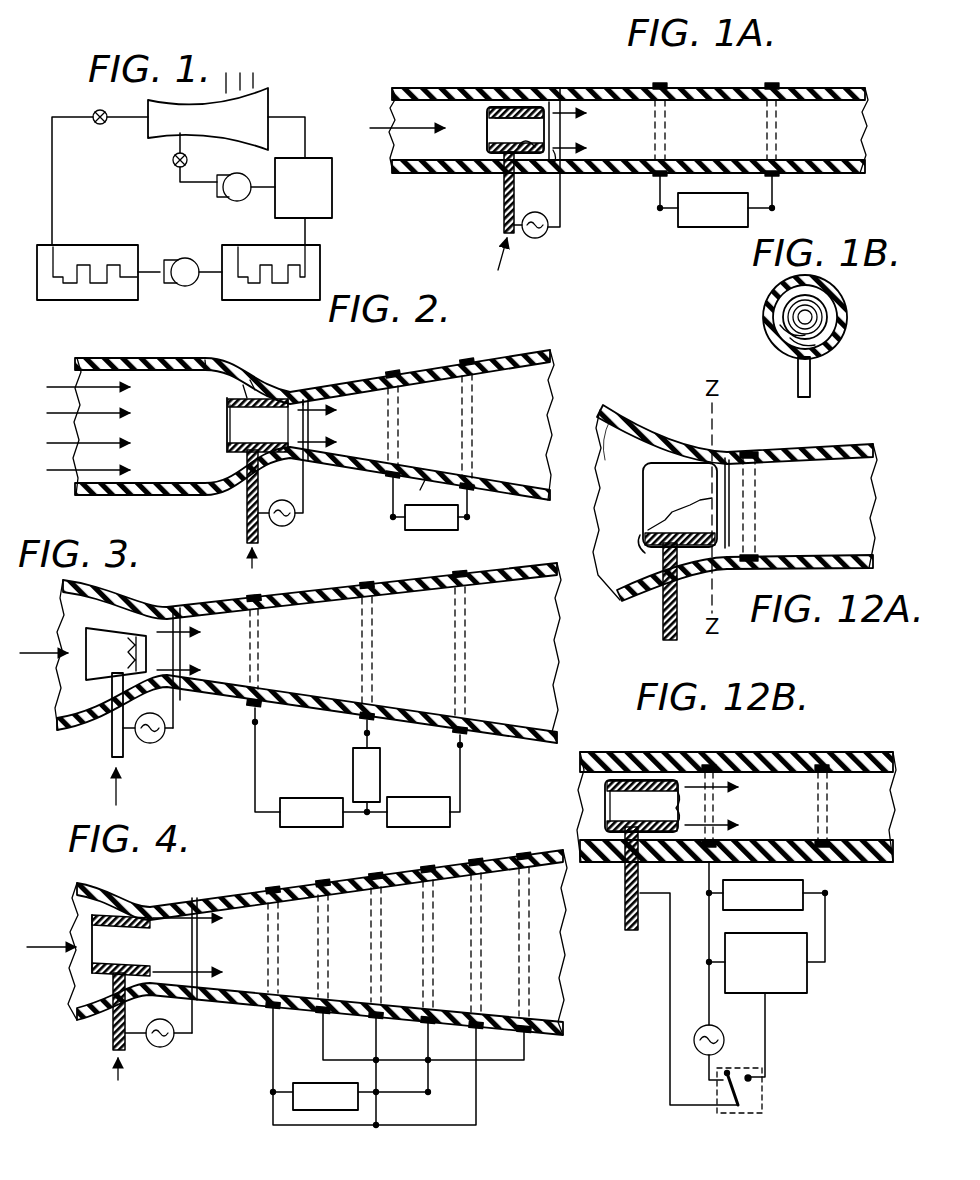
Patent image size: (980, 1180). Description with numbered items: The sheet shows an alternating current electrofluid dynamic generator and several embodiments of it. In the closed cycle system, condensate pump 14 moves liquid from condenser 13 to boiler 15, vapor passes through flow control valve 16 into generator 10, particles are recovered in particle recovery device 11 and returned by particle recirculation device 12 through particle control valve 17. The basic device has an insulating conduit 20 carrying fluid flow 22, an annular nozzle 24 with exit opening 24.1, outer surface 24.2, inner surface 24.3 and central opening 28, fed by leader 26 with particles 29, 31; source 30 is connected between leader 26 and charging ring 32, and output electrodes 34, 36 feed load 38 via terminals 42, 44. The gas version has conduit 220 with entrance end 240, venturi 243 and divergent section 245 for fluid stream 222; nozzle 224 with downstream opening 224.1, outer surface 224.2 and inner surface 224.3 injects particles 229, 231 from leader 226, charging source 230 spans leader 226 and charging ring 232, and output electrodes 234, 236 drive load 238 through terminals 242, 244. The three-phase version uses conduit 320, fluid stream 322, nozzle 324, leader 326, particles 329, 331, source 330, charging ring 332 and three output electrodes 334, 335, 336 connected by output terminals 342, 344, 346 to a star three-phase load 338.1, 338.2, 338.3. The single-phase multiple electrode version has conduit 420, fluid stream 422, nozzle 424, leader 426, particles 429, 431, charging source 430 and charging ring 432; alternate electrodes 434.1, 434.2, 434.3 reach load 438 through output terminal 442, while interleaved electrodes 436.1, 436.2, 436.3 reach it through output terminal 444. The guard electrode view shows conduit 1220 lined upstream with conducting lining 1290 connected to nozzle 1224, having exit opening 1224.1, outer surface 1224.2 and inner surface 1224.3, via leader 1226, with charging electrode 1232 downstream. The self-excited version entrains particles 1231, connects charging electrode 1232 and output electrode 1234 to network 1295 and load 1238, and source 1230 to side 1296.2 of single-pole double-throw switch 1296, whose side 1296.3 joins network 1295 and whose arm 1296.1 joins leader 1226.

In FIG. 1, the alternating current electrofluid dynamic generator 10 is at (268, 104).
In FIG. 1, the particle recovery device 11 is at (336, 132).
In FIG. 1, the particle recirculation device 12 is at (240, 173).
In FIG. 1, the condenser 13 is at (260, 243).
In FIG. 1, the condensate pump 14 is at (196, 259).
In FIG. 1, the boiler 15 is at (115, 243).
In FIG. 1, the flow control valve 16 is at (103, 124).
In FIG. 1, the particle control valve 17 is at (173, 160).
In FIG. 1A, the conduit 20 is at (828, 90).
In FIG. 1B, the conduit 20 is at (840, 300).
In FIG. 1A, the fluid flow arrow 22 is at (372, 130).
In FIG. 1A, the annular nozzle 24 is at (500, 105).
In FIG. 1B, the annular nozzle 24 is at (826, 316).
In FIG. 1A, the exit opening 24.1 is at (551, 100).
In FIG. 1B, the exit opening 24.1 is at (783, 316).
In FIG. 1A, the nozzle outer surface 24.2 is at (490, 106).
In FIG. 1B, the nozzle outer surface 24.2 is at (790, 330).
In FIG. 1A, the nozzle inner surface 24.3 is at (560, 200).
In FIG. 1B, the nozzle inner surface 24.3 is at (795, 352).
In FIG. 1A, the leader 26 is at (503, 228).
In FIG. 1B, the leader 26 is at (812, 370).
In FIG. 1A, the central opening 28 is at (486, 132).
In FIG. 1B, the central opening 28 is at (820, 325).
In FIG. 1A, the particle flow arrow 29 is at (496, 259).
In FIG. 1A, the source 30 is at (545, 234).
In FIG. 1A, the particle flow arrow 31 is at (575, 120).
In FIG. 1A, the charging ring 32 is at (562, 100).
In FIG. 1A, the output electrode 34 is at (665, 83).
In FIG. 1A, the output electrode 36 is at (772, 83).
In FIG. 1A, the load 38 is at (710, 218).
In FIG. 1A, the output terminal 42 is at (655, 212).
In FIG. 1A, the output terminal 44 is at (775, 208).
In FIG. 2, the conduit 220 is at (547, 358).
In FIG. 2, the fluid stream 222 is at (36, 395).
In FIG. 2, the nozzle 224 is at (283, 455).
In FIG. 2, the downstream opening 224.1 is at (303, 398).
In FIG. 2, the nozzle outer surface 224.2 is at (230, 445).
In FIG. 2, the nozzle inner surface 224.3 is at (266, 395).
In FIG. 2, the leader 226 is at (246, 522).
In FIG. 2, the particles 229 is at (250, 562).
In FIG. 2, the charging source 230 is at (280, 527).
In FIG. 2, the particles 231 is at (318, 420).
In FIG. 2, the charging ring 232 is at (306, 398).
In FIG. 2, the output electrode 234 is at (393, 370).
In FIG. 2, the output electrode 236 is at (468, 358).
In FIG. 2, the load 238 is at (435, 505).
In FIG. 2, the entrance end 240 is at (190, 350).
In FIG. 2, the terminal 242 is at (390, 520).
In FIG. 2, the venturi 243 is at (250, 378).
In FIG. 2, the terminal 244 is at (470, 517).
In FIG. 2, the divergent section 245 is at (432, 461).
In FIG. 3, the conduit 320 is at (548, 575).
In FIG. 3, the fluid stream 322 is at (33, 650).
In FIG. 3, the nozzle 324 is at (112, 628).
In FIG. 3, the leader 326 is at (110, 722).
In FIG. 3, the particles 329 is at (122, 784).
In FIG. 3, the source 330 is at (158, 740).
In FIG. 3, the particles 331 is at (187, 640).
In FIG. 3, the charging ring 332 is at (176, 608).
In FIG. 3, the output electrode 334 is at (256, 596).
In FIG. 3, the output electrode 335 is at (368, 583).
In FIG. 3, the output electrode 336 is at (460, 572).
In FIG. 3, the three-phase load 338.1 is at (335, 797).
In FIG. 3, the three-phase load 338.2 is at (378, 770).
In FIG. 3, the three-phase load 338.3 is at (445, 818).
In FIG. 3, the output terminal 342 is at (258, 724).
In FIG. 3, the output terminal 344 is at (370, 735).
In FIG. 3, the output terminal 346 is at (463, 747).
In FIG. 4, the conduit 420 is at (556, 852).
In FIG. 4, the fluid stream 422 is at (38, 950).
In FIG. 4, the nozzle 424 is at (100, 914).
In FIG. 4, the leader 426 is at (126, 1045).
In FIG. 4, the particles 429 is at (115, 1070).
In FIG. 4, the charging source 430 is at (168, 1045).
In FIG. 4, the particles 431 is at (205, 920).
In FIG. 4, the charging ring 432 is at (193, 898).
In FIG. 4, the output electrode 434.1 is at (272, 1010).
In FIG. 4, the output electrode 434.2 is at (373, 1020).
In FIG. 4, the output electrode 434.3 is at (478, 1032).
In FIG. 4, the output electrode 436.1 is at (320, 1015).
In FIG. 4, the output electrode 436.2 is at (430, 1026).
In FIG. 4, the output electrode 436.3 is at (527, 1035).
In FIG. 4, the load 438 is at (322, 1088).
In FIG. 4, the output terminal 442 is at (270, 1093).
In FIG. 4, the output terminal 444 is at (430, 1092).
In FIG. 12A, the conduit 1220 is at (735, 503).
In FIG. 12B, the conduit 1220 is at (860, 772).
In FIG. 12A, the nozzle 1224 is at (690, 450).
In FIG. 12B, the nozzle 1224 is at (620, 780).
In FIG. 12A, the exit opening 1224.1 is at (729, 458).
In FIG. 12B, the exit opening 1224.1 is at (646, 806).
In FIG. 12A, the nozzle outer surface 1224.2 is at (650, 530).
In FIG. 12A, the nozzle inner surface 1224.3 is at (645, 560).
In FIG. 12A, the leader 1226 is at (678, 635).
In FIG. 12B, the leader 1226 is at (624, 895).
In FIG. 12B, the source 1230 is at (694, 1035).
In FIG. 12B, the particles 1231 is at (720, 795).
In FIG. 12A, the charging electrode 1232 is at (757, 460).
In FIG. 12B, the charging electrode 1232 is at (706, 765).
In FIG. 12B, the output electrode 1234 is at (820, 765).
In FIG. 12B, the load 1238 is at (800, 895).
In FIG. 12A, the conducting lining 1290 is at (598, 440).
In FIG. 12B, the network 1295 is at (807, 975).
In FIG. 12B, the single-pole double-throw switch 1296 is at (755, 1113).
In FIG. 12B, the switch arm 1296.1 is at (740, 1090).
In FIG. 12B, the switch side 1296.2 is at (730, 1070).
In FIG. 12B, the switch side 1296.3 is at (752, 1074).